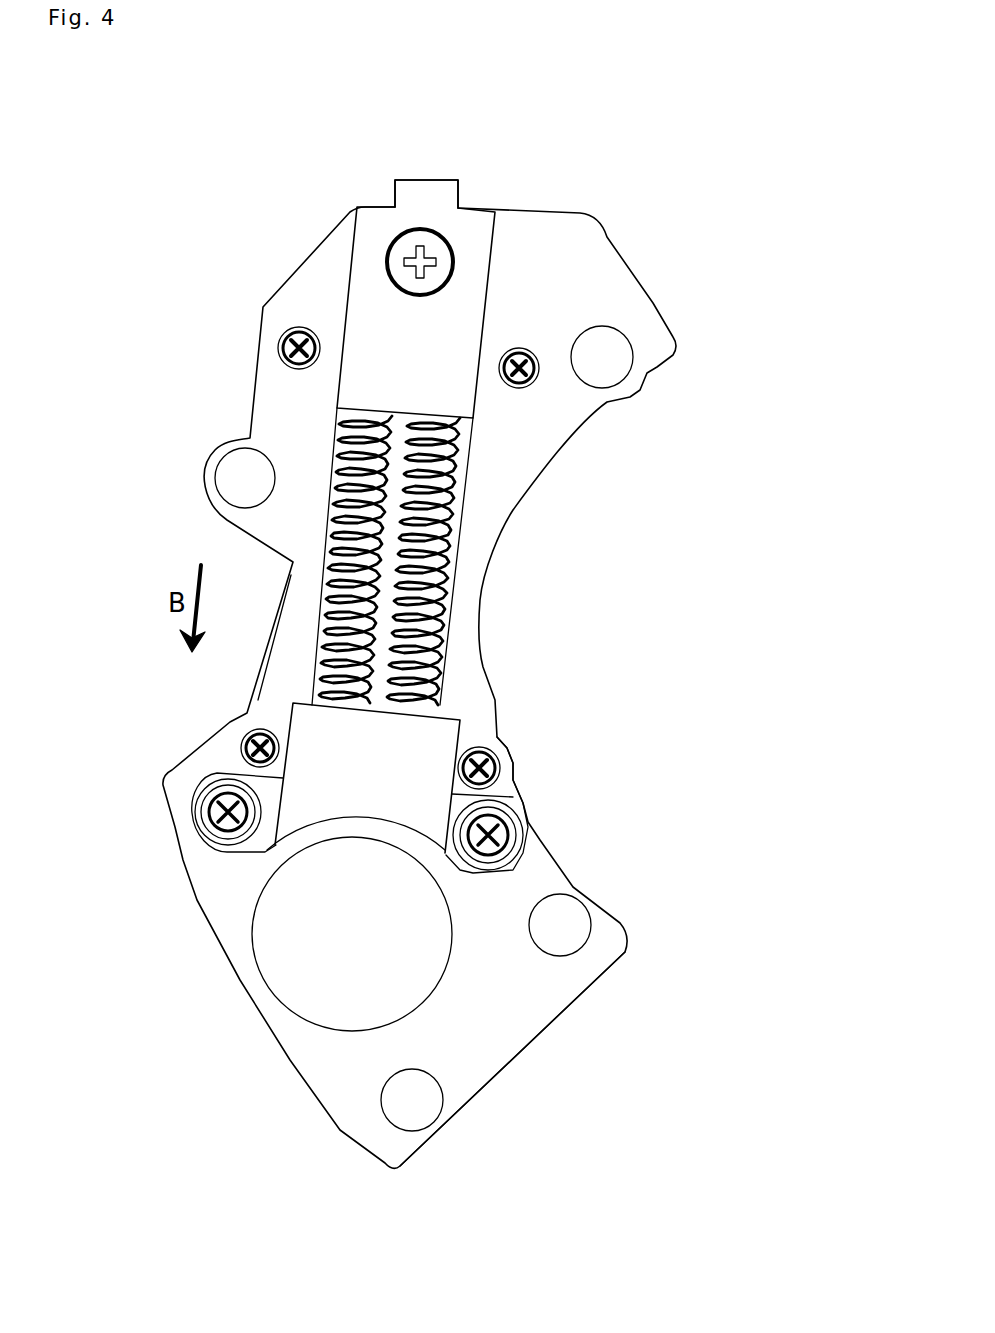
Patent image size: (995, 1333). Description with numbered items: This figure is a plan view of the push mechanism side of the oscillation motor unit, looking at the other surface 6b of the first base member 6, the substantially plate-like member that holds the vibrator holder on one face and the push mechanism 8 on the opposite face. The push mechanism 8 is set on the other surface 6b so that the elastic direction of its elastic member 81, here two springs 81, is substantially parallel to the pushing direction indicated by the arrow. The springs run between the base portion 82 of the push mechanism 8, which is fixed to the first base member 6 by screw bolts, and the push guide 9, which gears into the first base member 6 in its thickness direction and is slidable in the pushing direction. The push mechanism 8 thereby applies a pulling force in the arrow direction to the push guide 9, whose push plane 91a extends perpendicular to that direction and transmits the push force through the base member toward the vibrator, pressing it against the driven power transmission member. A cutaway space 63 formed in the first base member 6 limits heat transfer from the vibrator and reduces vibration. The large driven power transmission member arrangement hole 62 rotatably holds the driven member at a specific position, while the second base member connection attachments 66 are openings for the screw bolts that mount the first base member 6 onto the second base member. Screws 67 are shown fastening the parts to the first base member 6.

The first base member 6 is at (300, 1057).
The other surface 6b is at (467, 1090).
The second base member connection attachments 66 is at (415, 1125).
The driven power transmission member arrangement hole 62 is at (265, 960).
The fixing screws 67 is at (192, 822).
The push mechanism 8 is at (434, 452).
The push guide 9 is at (493, 240).
The push plane 91a is at (445, 180).
The cutaway space 63 is at (450, 630).
The elastic member 81 is at (450, 547).
The base portion 82 is at (430, 728).